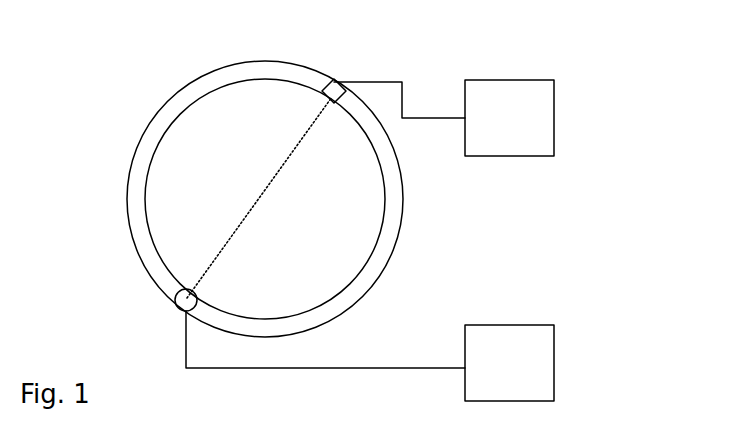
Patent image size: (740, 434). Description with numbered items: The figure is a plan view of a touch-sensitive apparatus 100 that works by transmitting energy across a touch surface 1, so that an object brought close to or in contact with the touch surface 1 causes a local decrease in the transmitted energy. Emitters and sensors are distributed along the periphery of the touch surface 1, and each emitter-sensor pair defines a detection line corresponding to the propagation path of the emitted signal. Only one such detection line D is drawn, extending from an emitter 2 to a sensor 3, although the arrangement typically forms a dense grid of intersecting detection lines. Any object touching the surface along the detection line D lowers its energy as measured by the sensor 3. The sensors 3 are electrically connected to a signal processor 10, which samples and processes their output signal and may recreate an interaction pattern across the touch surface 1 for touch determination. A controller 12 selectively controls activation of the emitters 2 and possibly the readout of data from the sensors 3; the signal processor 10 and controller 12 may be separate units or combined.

The touch-sensitive apparatus 100 is at (132, 104).
The touch surface 1 is at (355, 238).
The emitter 2 is at (185, 301).
The sensor 3 is at (333, 80).
The detection line D is at (247, 215).
The signal processor 10 is at (554, 100).
The controller 12 is at (554, 355).